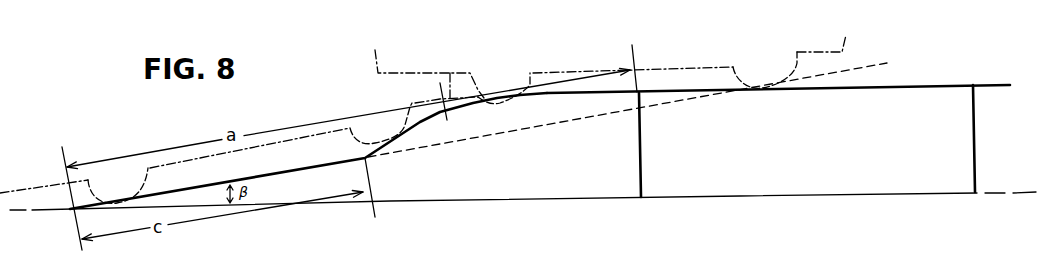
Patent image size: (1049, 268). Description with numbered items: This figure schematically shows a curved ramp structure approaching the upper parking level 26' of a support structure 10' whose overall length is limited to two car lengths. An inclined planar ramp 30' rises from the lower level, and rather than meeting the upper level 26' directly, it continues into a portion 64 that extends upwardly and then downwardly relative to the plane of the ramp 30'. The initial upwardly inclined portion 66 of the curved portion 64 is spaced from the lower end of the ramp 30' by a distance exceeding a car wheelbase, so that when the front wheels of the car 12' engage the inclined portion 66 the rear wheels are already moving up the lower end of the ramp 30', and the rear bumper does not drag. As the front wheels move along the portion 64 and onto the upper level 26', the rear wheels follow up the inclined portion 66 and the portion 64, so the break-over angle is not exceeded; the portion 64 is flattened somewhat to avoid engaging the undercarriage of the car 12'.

The support structure 10' is at (840, 141).
The car 12' is at (423, 119).
The upper parking level 26' is at (781, 68).
The inclined planar ramp 30' is at (478, 136).
The curved portion 64 is at (440, 96).
The upwardly inclined portion 66 is at (362, 156).